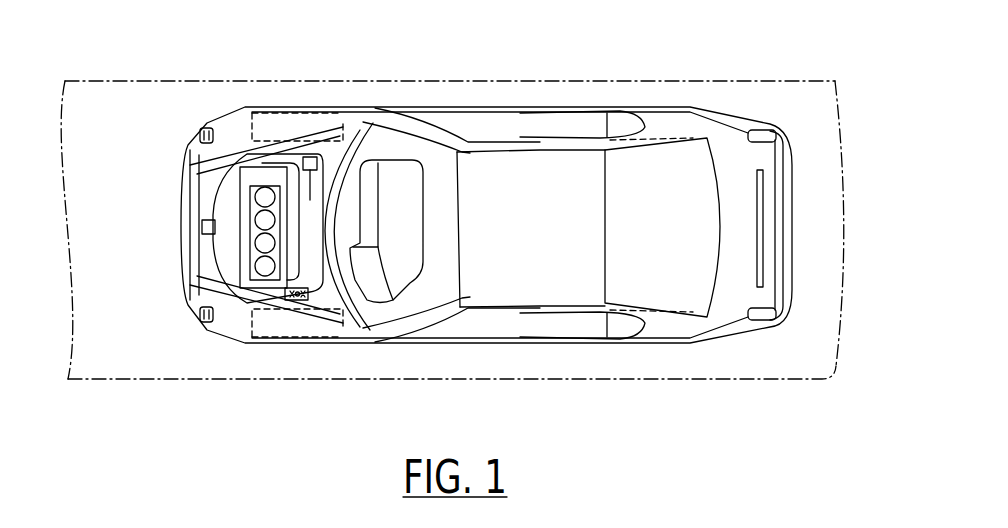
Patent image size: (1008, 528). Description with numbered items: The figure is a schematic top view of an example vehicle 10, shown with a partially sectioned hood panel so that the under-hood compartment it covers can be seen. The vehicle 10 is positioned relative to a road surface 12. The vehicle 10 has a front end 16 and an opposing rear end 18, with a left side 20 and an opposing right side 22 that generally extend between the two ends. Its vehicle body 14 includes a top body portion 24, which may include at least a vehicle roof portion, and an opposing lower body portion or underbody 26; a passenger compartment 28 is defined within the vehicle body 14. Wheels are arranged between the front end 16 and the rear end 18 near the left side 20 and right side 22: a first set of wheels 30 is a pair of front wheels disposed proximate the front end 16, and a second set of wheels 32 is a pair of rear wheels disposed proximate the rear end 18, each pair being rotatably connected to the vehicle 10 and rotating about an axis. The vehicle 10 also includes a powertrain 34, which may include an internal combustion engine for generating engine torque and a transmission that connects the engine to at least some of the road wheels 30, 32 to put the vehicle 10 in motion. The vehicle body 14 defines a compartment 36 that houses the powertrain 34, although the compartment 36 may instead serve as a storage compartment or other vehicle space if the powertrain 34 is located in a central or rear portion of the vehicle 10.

The vehicle 10 is at (167, 392).
The road surface 12 is at (96, 80).
The vehicle body 14 is at (530, 160).
The front end 16 is at (182, 193).
The rear end 18 is at (792, 198).
The left side 20 is at (543, 345).
The right side 22 is at (445, 107).
The top body portion 24 is at (531, 243).
The underbody 26 is at (570, 107).
The passenger compartment 28 is at (392, 260).
The first set of wheels 30 is at (300, 106).
The second set of wheels 32 is at (698, 132).
The powertrain 34 is at (233, 256).
The compartment 36 is at (282, 292).